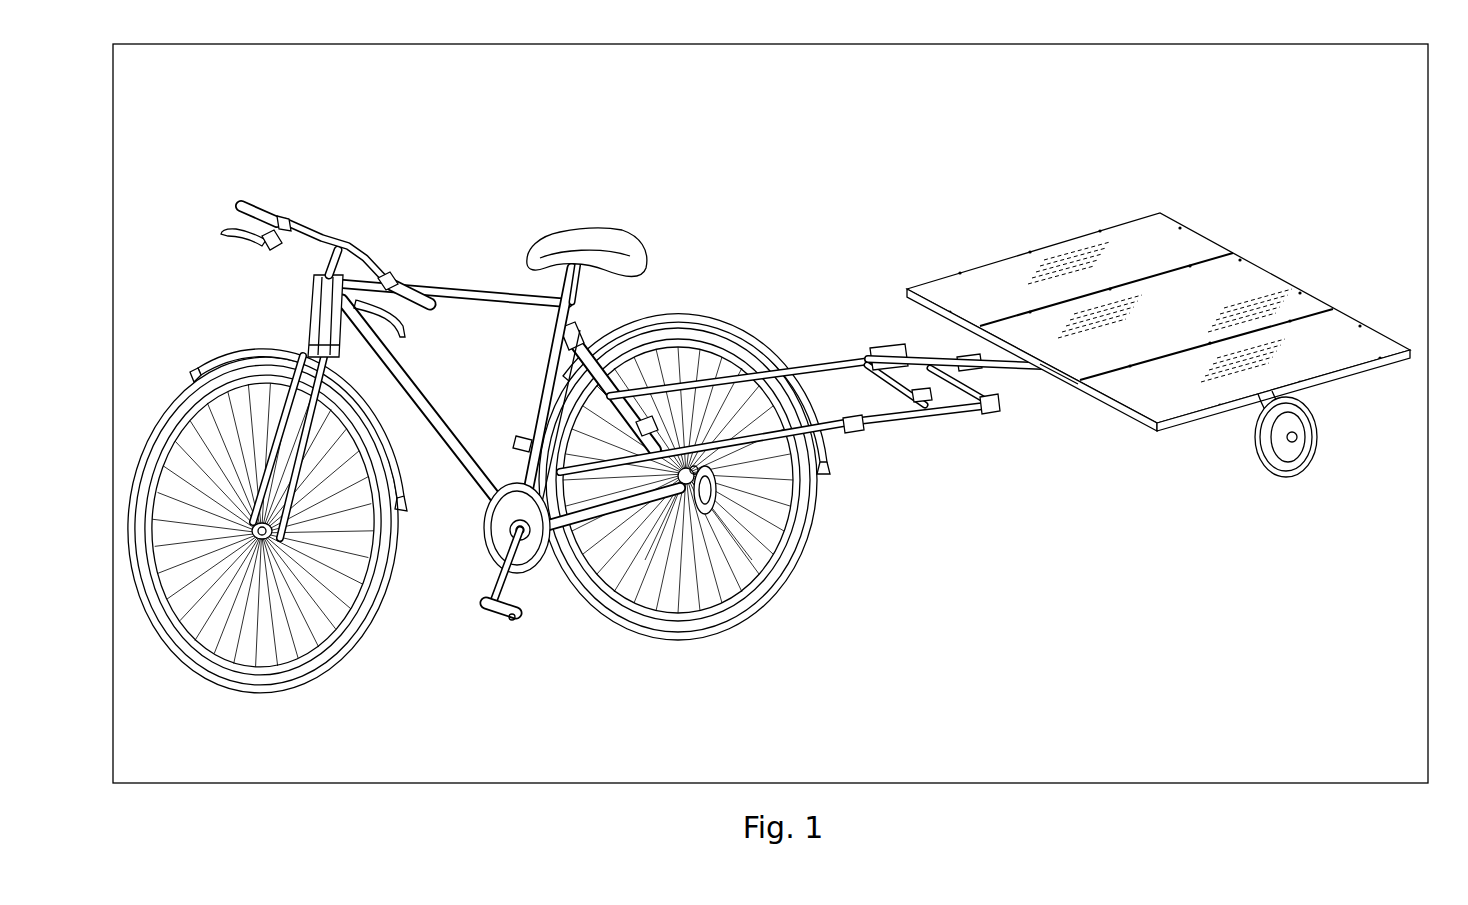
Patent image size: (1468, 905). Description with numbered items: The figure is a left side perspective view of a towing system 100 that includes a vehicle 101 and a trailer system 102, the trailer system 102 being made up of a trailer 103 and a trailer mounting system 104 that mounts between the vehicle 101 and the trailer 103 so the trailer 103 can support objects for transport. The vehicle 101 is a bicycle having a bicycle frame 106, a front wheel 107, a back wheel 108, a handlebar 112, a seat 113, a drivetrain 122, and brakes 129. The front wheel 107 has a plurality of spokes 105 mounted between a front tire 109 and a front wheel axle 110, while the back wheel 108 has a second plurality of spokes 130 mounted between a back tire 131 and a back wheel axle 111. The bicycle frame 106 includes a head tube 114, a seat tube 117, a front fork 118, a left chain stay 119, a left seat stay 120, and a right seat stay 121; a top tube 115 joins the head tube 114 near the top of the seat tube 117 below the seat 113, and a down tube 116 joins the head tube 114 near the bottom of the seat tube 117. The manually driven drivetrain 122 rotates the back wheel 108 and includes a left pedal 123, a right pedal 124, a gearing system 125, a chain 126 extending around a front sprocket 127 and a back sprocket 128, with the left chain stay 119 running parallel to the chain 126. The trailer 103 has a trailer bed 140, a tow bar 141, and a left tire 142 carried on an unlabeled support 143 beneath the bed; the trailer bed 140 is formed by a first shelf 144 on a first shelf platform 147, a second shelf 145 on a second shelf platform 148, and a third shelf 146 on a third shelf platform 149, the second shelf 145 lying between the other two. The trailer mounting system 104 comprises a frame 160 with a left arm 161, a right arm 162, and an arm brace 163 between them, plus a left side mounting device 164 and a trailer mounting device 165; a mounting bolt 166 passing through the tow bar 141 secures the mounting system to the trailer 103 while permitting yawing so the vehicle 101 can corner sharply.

The towing system 100 is at (764, 434).
The vehicle 101 is at (242, 180).
The trailer system 102 is at (868, 226).
The trailer 103 is at (995, 254).
The trailer mounting system 104 is at (827, 366).
The plurality of spokes 105 is at (260, 640).
The bicycle frame 106 is at (467, 285).
The front wheel 107 is at (286, 694).
The back wheel 108 is at (718, 634).
The front tire 109 is at (176, 405).
The front wheel axle 110 is at (272, 538).
The back wheel axle 111 is at (700, 514).
The handlebar 112 is at (273, 217).
The seat 113 is at (598, 229).
The head tube 114 is at (316, 316).
The top tube 115 is at (418, 278).
The down tube 116 is at (407, 384).
The seat tube 117 is at (548, 386).
The front fork 118 is at (330, 383).
The left chain stay 119 is at (587, 520).
The left seat stay 120 is at (612, 378).
The right seat stay 121 is at (576, 334).
The drivetrain 122 is at (489, 574).
The left pedal 123 is at (500, 628).
The right pedal 124 is at (518, 438).
The gearing system 125 is at (484, 554).
The chain 126 is at (641, 532).
The front sprocket 127 is at (488, 523).
The back sprocket 128 is at (703, 474).
The brakes 129 is at (262, 248).
The second plurality of spokes 130 is at (720, 543).
The back tire 131 is at (738, 548).
The trailer bed 140 is at (1192, 220).
The tow bar 141 is at (1017, 372).
The left tire 142 is at (1294, 480).
The trailer wheel fork 143 is at (1257, 402).
The first shelf 144 is at (1136, 251).
The second shelf 145 is at (1165, 311).
The third shelf 146 is at (1298, 346).
The first shelf platform 147 is at (923, 304).
The second shelf platform 148 is at (1058, 386).
The third shelf platform 149 is at (1150, 432).
The frame 160 is at (891, 432).
The left arm 161 is at (853, 436).
The right arm 162 is at (797, 372).
The arm brace 163 is at (890, 391).
The left side mounting device 164 is at (650, 434).
The trailer mounting device 165 is at (982, 416).
The mounting bolt 166 is at (968, 362).